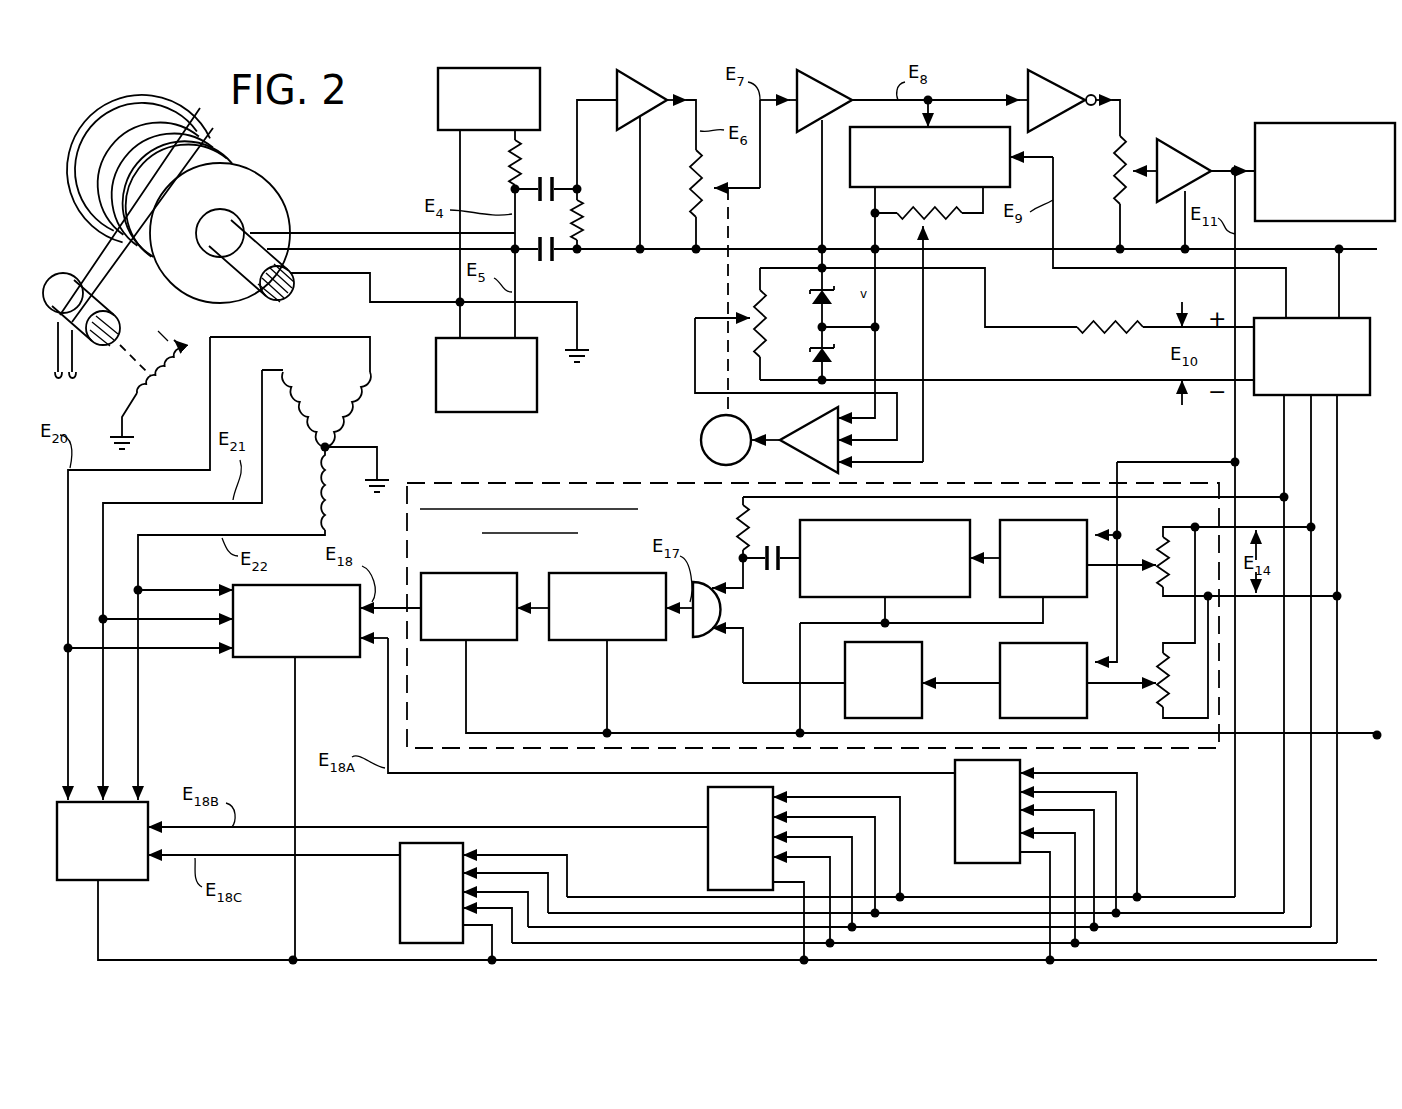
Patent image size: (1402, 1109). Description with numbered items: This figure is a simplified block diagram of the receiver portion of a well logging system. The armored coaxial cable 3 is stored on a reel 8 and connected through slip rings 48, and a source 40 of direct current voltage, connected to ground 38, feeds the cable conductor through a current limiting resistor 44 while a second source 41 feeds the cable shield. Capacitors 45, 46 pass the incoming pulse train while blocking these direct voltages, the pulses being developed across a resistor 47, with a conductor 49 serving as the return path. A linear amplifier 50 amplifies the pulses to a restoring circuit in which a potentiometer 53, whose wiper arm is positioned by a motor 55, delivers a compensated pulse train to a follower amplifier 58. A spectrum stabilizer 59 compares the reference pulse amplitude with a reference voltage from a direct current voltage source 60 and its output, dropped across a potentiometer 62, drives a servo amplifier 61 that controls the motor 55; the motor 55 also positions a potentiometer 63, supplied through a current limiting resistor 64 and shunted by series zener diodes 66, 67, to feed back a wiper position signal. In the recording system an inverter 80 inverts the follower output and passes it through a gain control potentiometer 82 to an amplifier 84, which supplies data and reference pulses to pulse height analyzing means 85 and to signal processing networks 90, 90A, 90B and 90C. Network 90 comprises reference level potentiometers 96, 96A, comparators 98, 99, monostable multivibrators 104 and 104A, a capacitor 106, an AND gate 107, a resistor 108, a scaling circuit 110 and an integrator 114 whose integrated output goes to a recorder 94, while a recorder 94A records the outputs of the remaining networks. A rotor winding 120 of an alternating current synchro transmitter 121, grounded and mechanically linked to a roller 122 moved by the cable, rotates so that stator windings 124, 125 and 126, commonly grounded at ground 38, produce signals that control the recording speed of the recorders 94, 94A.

The reel 8 is at (108, 118).
The roller 122 is at (72, 270).
The armored coaxial cable 3 is at (76, 374).
The slip rings 48 is at (235, 296).
The rotor winding 120 is at (160, 388).
The ground 38 is at (134, 437).
The alternating current synchro transmitter 121 is at (411, 365).
The stator winding 124 is at (352, 420).
The stator winding 125 is at (312, 380).
The stator winding 126 is at (336, 514).
The source of direct current voltage 40 is at (438, 97).
The source of direct current voltage 41 is at (515, 412).
The current limiting resistor 44 is at (505, 160).
The capacitor 45 is at (552, 178).
The capacitor 46 is at (554, 262).
The resistor 47 is at (582, 212).
The conductor 49 is at (622, 253).
The linear amplifier 50 is at (655, 90).
The potentiometer 53 is at (690, 163).
The motor 55 is at (700, 432).
The follower amplifier 58 is at (828, 92).
The spectrum stabilizer 59 is at (862, 192).
The source of direct current voltages 60 is at (1314, 318).
The servo amplifier 61 is at (806, 426).
The potentiometer 62 is at (948, 226).
The potentiometer 63 is at (750, 292).
The current limiting resistor 64 is at (1120, 320).
The zener diode 66 is at (816, 296).
The zener diode 67 is at (814, 357).
The inverter 80 is at (1066, 90).
The gain control potentiometer 82 is at (1108, 192).
The amplifier 84 is at (1184, 150).
The pulse height analyzing means 85 is at (1370, 123).
The signal processing network 90 is at (620, 481).
The signal processing network 90A is at (1006, 822).
The signal processing network 90B is at (759, 850).
The signal processing network 90C is at (450, 904).
The recorder 94 is at (325, 648).
The recorder 94A is at (84, 852).
The reference level potentiometer 96 is at (1153, 580).
The reference level potentiometer 96A is at (1153, 698).
The comparator 98 is at (1086, 526).
The comparator 99 is at (1000, 660).
The monostable multivibrator 104 is at (955, 522).
The monostable multivibrator 104A is at (862, 694).
The capacitor 106 is at (780, 546).
The AND gate 107 is at (712, 632).
The resistor 108 is at (738, 520).
The scaling circuit 110 is at (580, 574).
The integrator 114 is at (490, 633).